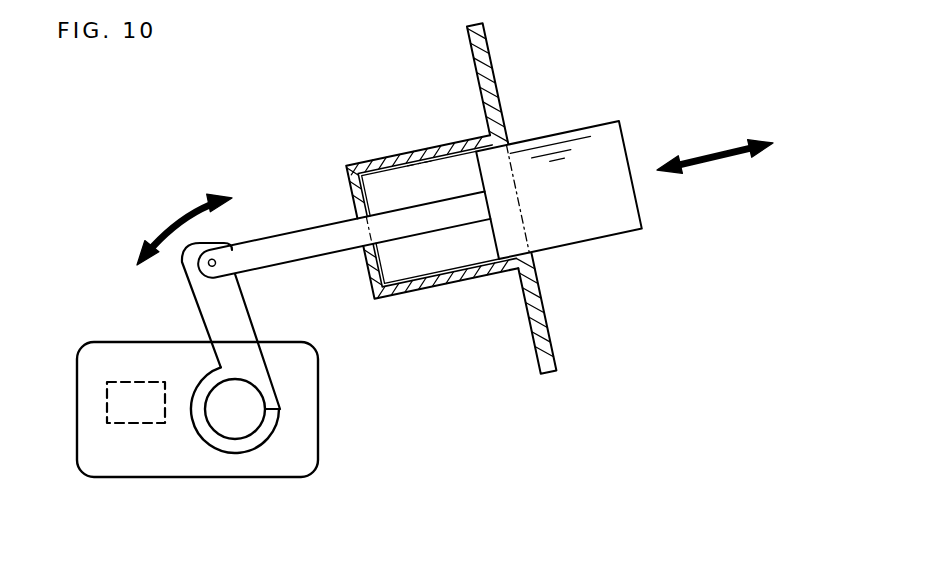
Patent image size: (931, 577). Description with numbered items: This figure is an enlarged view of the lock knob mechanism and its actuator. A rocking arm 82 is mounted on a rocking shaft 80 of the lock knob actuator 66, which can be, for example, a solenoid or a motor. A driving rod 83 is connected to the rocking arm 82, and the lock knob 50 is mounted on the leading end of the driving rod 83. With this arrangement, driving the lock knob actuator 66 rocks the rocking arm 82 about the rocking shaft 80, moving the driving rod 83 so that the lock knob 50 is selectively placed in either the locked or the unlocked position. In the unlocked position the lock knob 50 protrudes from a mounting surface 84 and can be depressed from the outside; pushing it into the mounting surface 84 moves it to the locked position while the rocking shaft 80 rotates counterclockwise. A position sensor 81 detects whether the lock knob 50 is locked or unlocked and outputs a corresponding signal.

The lock knob 50 is at (640, 203).
The lock knob actuator 66 is at (320, 423).
The rocking shaft 80 is at (228, 415).
The position sensor 81 is at (132, 424).
The rocking arm 82 is at (212, 308).
The driving rod 83 is at (302, 242).
The mounting surface 84 is at (487, 48).